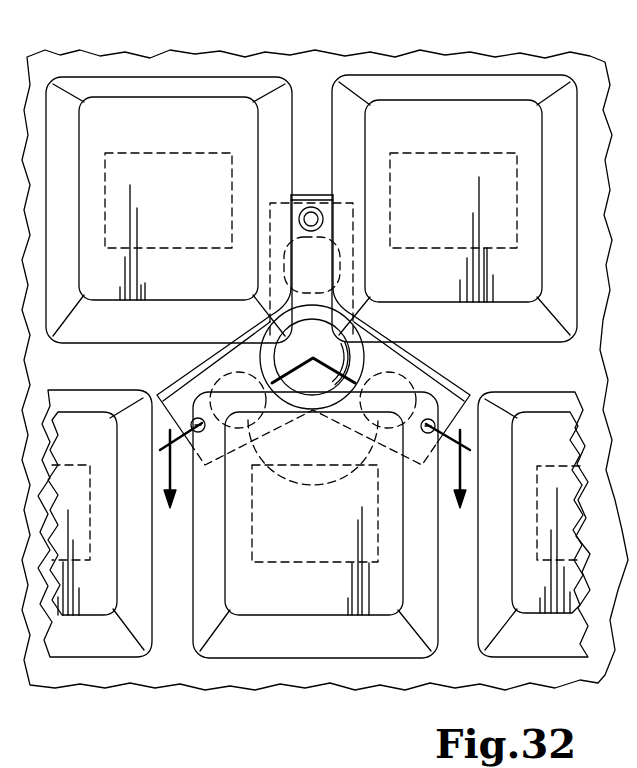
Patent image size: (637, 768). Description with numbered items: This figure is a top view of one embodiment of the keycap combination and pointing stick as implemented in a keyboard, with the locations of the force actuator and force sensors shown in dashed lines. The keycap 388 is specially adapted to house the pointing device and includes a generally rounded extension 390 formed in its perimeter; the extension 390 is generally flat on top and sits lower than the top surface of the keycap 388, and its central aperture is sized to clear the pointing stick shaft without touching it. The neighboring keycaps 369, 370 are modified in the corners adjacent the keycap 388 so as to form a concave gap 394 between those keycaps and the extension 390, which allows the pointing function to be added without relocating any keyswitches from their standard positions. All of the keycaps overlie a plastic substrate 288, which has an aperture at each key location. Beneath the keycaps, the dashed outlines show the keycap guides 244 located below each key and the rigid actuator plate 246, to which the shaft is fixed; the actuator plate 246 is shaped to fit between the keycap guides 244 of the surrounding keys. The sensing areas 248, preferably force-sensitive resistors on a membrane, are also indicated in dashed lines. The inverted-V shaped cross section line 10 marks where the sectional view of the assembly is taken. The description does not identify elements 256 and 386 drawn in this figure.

The cross section line 10 is at (316, 481).
The keycap guide 244 is at (197, 153).
The actuator plate 246 is at (193, 370).
The sensing areas 248 is at (340, 268).
The fastener opening 256 is at (299, 219).
The plastic substrate 288 is at (172, 623).
The keycap 369 is at (241, 77).
The keycap 370 is at (438, 75).
The locking chevron 386 is at (312, 382).
The keycap 388 is at (336, 658).
The rounded extension 390 is at (275, 333).
The concave gap 394 is at (365, 330).